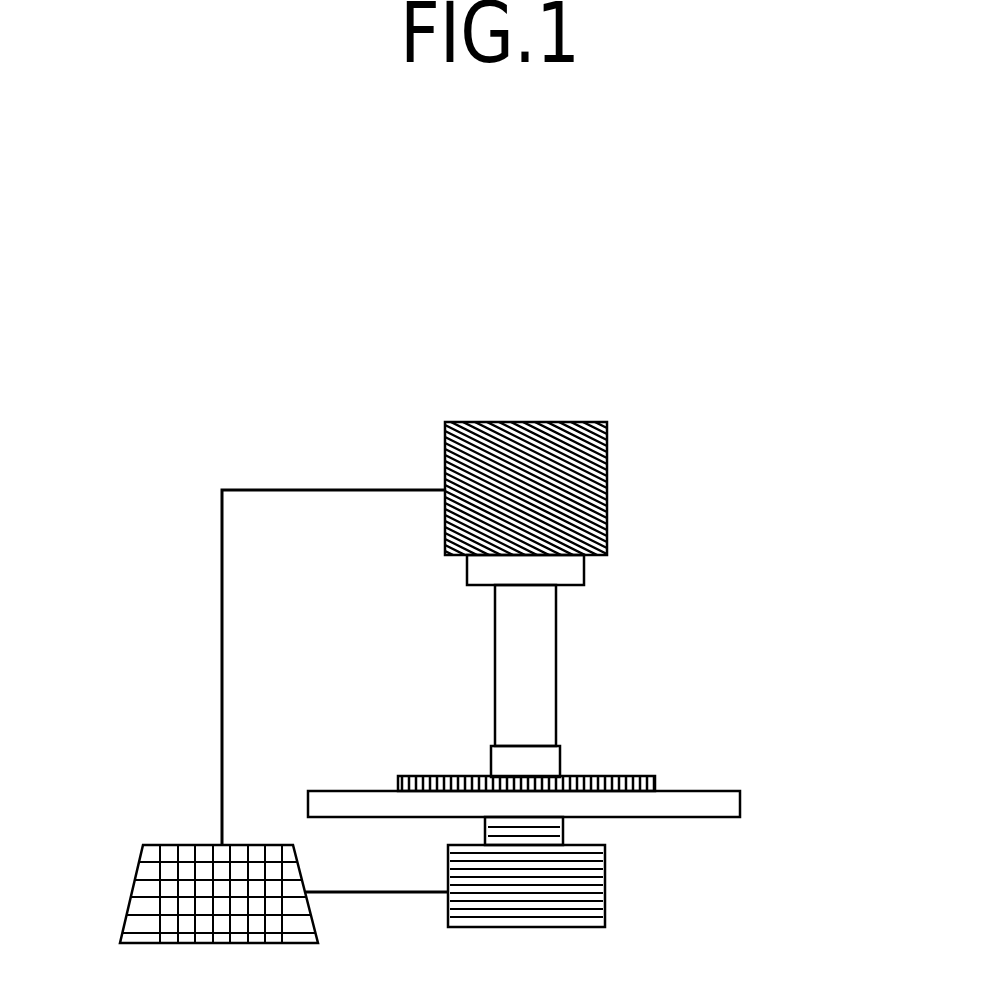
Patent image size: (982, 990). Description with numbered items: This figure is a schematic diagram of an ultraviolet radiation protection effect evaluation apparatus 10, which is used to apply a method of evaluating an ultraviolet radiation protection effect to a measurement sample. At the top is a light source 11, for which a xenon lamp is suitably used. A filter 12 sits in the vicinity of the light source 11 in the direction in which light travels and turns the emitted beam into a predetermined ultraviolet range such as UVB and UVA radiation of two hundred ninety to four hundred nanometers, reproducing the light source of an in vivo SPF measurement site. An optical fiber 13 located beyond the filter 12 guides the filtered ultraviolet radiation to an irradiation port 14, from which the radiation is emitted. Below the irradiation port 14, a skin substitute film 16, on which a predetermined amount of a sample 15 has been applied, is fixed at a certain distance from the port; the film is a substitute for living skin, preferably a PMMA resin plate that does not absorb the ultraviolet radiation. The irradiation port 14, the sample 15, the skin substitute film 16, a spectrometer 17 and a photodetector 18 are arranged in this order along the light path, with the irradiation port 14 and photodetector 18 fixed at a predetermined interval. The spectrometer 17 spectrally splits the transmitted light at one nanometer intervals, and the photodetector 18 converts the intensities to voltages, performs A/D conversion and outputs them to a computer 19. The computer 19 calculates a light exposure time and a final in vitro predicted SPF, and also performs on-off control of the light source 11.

The ultraviolet radiation protection effect evaluation apparatus 10 is at (92, 335).
The light source 11 is at (600, 421).
The filter 12 is at (467, 573).
The optical fiber 13 is at (556, 640).
The irradiation port 14 is at (491, 765).
The sample 15 is at (627, 776).
The skin substitute film 16 is at (740, 790).
The spectrometer 17 is at (563, 827).
The photodetector 18 is at (605, 895).
The computer 19 is at (143, 880).